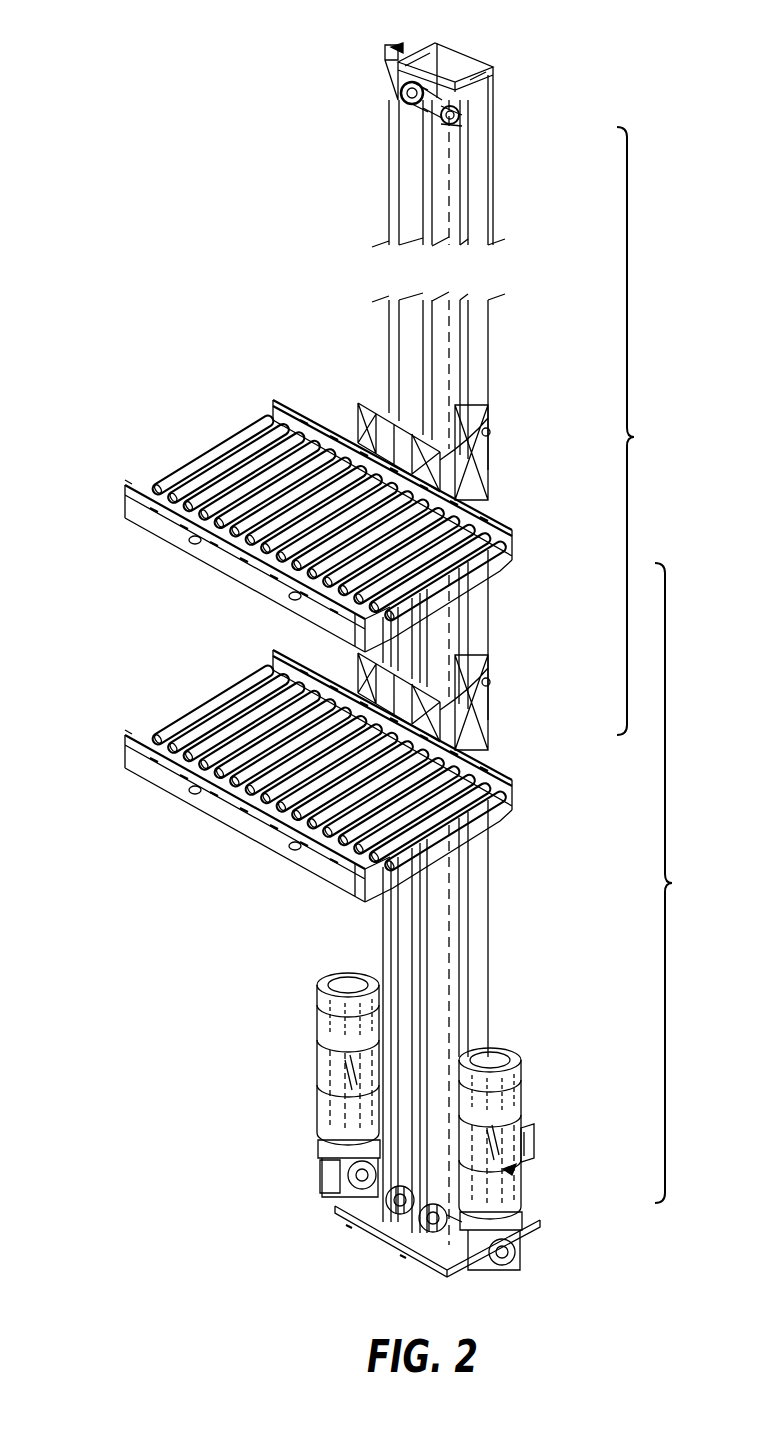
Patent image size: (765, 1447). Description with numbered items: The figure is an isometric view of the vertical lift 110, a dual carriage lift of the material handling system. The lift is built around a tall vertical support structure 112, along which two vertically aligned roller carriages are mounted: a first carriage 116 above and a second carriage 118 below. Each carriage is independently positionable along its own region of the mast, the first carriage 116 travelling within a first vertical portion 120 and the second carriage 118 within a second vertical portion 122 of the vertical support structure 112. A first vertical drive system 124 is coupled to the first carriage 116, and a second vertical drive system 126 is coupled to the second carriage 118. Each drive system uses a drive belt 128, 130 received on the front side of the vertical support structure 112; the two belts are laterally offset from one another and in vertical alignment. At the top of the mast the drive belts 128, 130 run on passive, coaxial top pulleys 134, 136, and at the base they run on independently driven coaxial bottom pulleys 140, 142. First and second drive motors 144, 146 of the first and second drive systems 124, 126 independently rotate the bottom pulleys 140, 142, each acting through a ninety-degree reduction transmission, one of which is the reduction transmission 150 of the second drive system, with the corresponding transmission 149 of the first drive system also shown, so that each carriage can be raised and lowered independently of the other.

The vertical lift 110 is at (393, 47).
The vertical support structure 112 is at (388, 358).
The first carriage 116 is at (210, 473).
The second carriage 118 is at (216, 735).
The first vertical portion 120 is at (648, 431).
The second vertical portion 122 is at (687, 883).
The first vertical drive system 124 is at (322, 1024).
The second vertical drive system 126 is at (513, 1173).
The drive belt 128 is at (381, 939).
The drive belt 130 is at (422, 970).
The top pulley 134 is at (400, 89).
The top pulley 136 is at (432, 110).
The bottom pulley 140 is at (397, 1185).
The bottom pulley 142 is at (434, 1208).
The first drive motor 144 is at (323, 1100).
The second drive motor 146 is at (510, 1136).
The first gearbox 149 is at (322, 1182).
The 90° reduction transmission 150 is at (515, 1253).